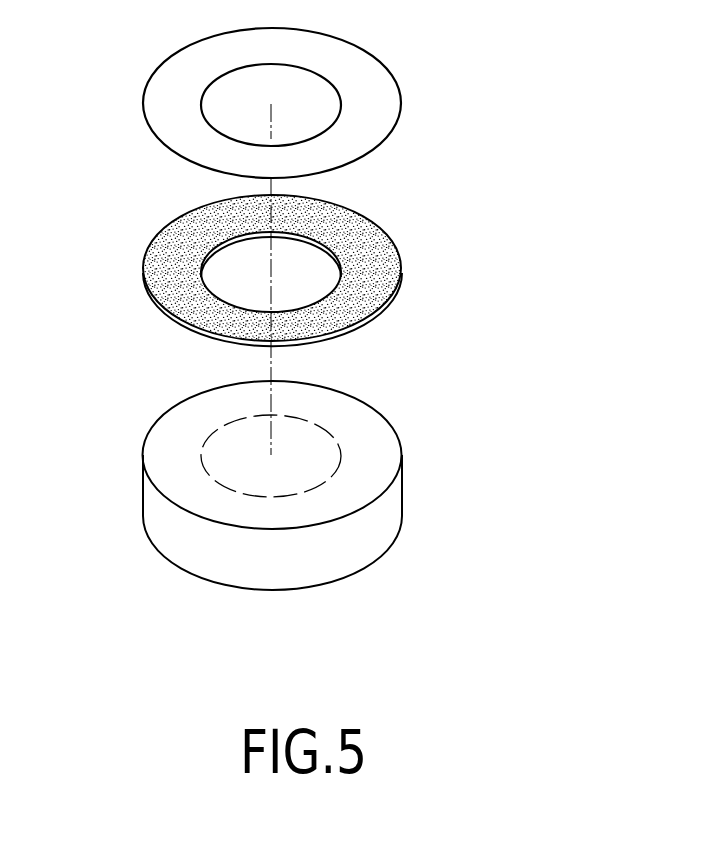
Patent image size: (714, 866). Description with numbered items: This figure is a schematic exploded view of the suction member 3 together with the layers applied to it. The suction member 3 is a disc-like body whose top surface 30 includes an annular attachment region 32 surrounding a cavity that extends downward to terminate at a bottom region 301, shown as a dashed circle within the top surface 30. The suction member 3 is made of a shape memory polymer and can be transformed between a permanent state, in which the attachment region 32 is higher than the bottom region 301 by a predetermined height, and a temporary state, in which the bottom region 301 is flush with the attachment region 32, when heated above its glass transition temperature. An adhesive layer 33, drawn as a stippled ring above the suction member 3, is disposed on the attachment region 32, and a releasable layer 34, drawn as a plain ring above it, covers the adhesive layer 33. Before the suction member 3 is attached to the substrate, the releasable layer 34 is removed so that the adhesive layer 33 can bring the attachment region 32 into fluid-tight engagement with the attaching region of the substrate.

The suction member 3 is at (294, 307).
The top surface 30 is at (257, 467).
The attachment region 32 is at (203, 410).
The bottom region 301 is at (257, 475).
The adhesive layer 33 is at (377, 263).
The releasable layer 34 is at (377, 87).